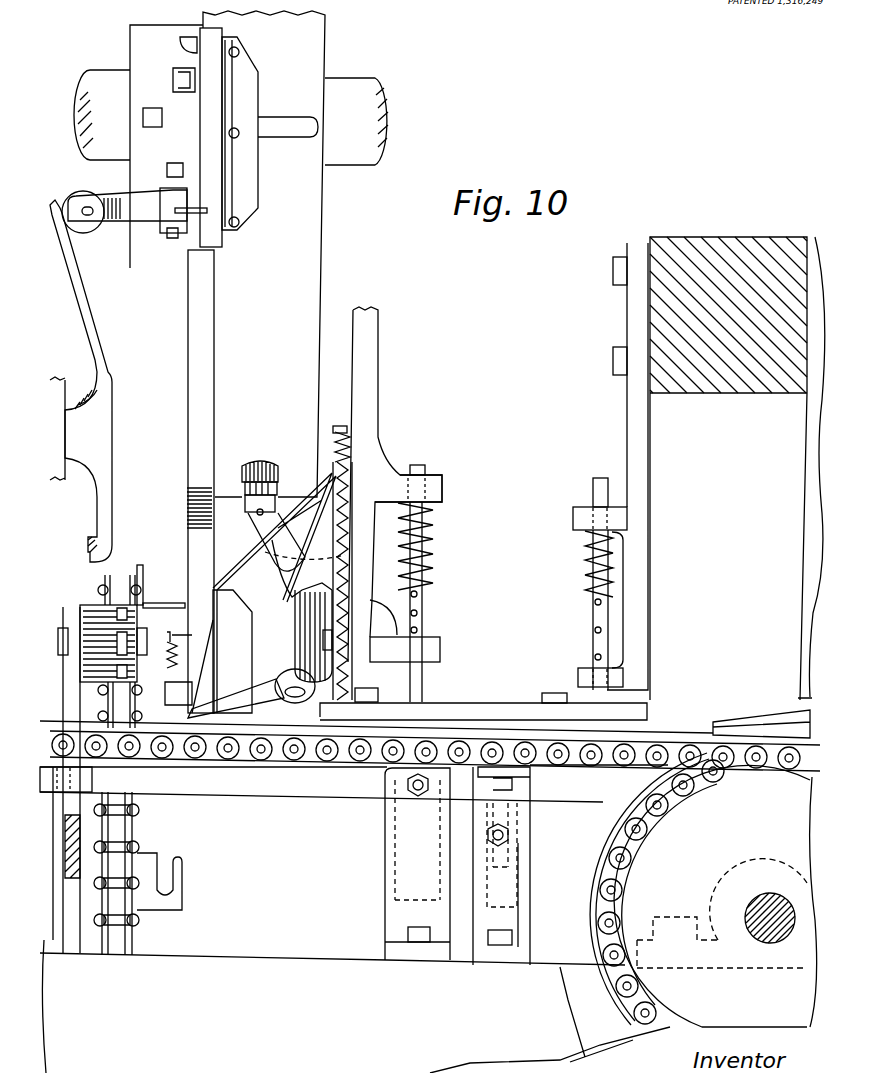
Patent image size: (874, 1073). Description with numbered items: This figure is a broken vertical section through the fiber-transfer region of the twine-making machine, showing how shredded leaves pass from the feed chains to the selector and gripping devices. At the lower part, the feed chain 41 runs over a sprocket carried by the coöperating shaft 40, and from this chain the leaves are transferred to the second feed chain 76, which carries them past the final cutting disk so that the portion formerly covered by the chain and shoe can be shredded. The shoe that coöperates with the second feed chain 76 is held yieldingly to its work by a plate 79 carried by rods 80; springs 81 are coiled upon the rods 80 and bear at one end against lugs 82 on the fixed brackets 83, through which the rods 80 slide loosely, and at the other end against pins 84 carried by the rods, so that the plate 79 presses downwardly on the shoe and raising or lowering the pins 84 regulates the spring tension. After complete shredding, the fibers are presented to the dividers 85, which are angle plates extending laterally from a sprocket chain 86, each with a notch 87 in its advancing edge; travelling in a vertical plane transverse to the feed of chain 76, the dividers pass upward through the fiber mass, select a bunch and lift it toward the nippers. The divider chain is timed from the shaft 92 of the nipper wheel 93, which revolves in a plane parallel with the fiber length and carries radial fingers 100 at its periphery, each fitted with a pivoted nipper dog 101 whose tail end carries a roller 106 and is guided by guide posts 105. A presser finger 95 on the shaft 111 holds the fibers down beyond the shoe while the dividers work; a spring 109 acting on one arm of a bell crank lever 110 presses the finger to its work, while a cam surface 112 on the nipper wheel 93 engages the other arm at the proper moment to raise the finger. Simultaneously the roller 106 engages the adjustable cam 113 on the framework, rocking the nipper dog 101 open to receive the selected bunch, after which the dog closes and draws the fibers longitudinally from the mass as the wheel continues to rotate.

The coöperating shaft 40 is at (752, 937).
The feed chain 41 is at (723, 777).
The second feed chain 76 is at (318, 757).
The plate 79 is at (480, 727).
The rods 80 is at (430, 679).
The springs 81 is at (430, 562).
The lugs 82 is at (437, 490).
The fixed brackets 83 is at (370, 365).
The pins 84 is at (422, 613).
The dividers 85 is at (144, 600).
The sprocket chain 86 is at (133, 576).
The notch 87 is at (147, 606).
The shaft 92 is at (365, 157).
The nipper wheel 93 is at (307, 238).
The presser finger 95 is at (238, 703).
The radial fingers 100 is at (210, 238).
The nipper dog 101 is at (148, 213).
The guide posts 105 is at (150, 190).
The rollers 106 is at (90, 227).
The spring 109 is at (333, 447).
The bell crank lever 110 is at (267, 530).
The shaft 111 is at (330, 687).
The cam surface 112 is at (233, 190).
The cam 113 is at (95, 345).